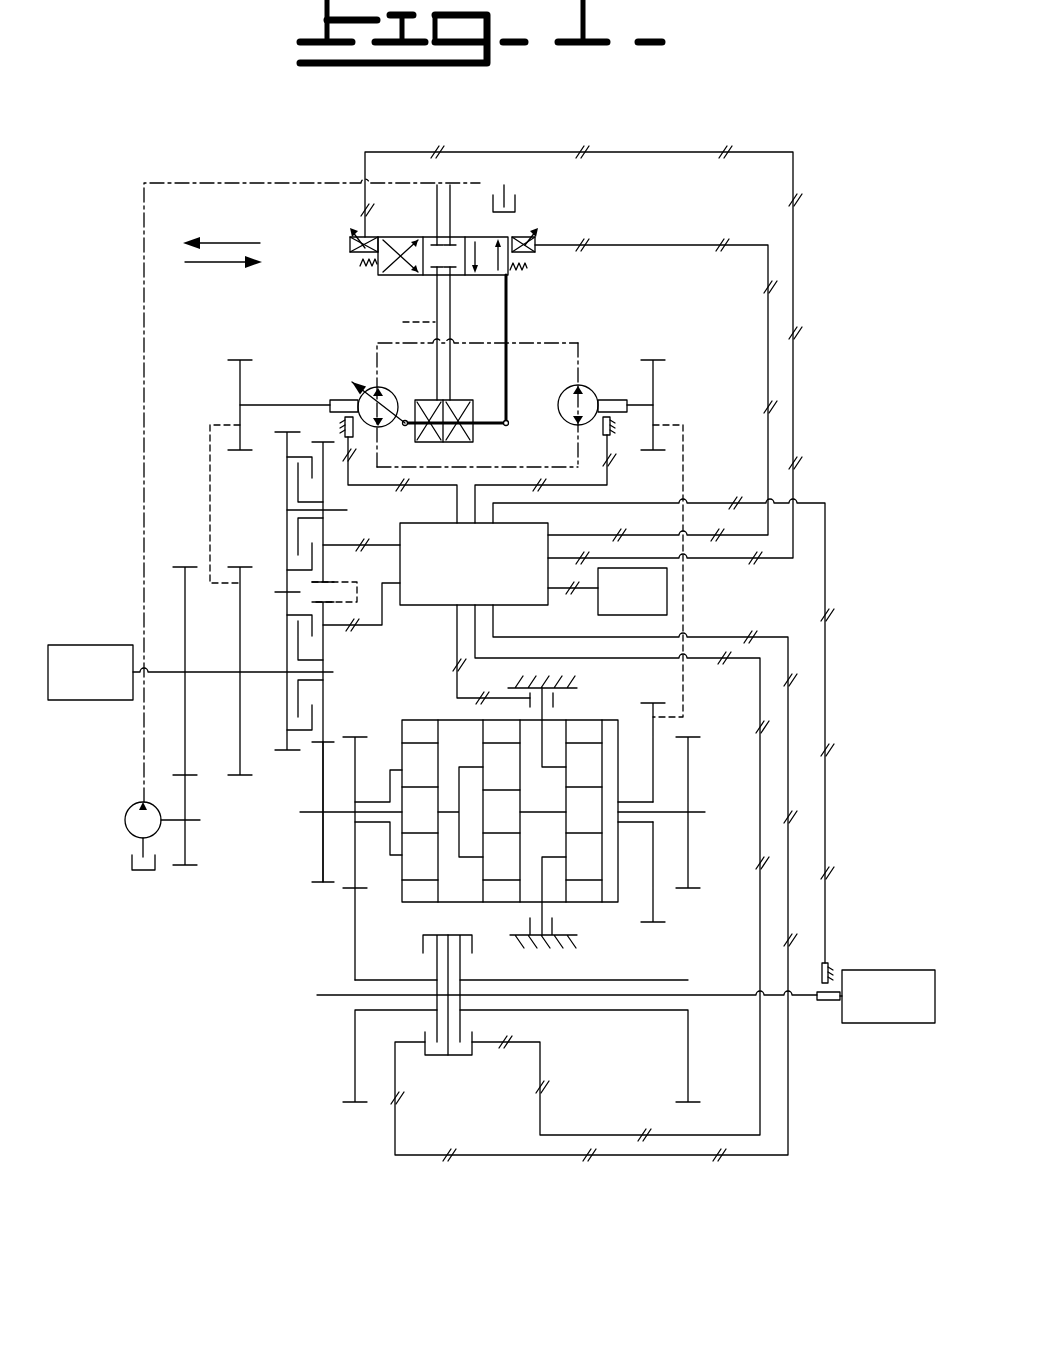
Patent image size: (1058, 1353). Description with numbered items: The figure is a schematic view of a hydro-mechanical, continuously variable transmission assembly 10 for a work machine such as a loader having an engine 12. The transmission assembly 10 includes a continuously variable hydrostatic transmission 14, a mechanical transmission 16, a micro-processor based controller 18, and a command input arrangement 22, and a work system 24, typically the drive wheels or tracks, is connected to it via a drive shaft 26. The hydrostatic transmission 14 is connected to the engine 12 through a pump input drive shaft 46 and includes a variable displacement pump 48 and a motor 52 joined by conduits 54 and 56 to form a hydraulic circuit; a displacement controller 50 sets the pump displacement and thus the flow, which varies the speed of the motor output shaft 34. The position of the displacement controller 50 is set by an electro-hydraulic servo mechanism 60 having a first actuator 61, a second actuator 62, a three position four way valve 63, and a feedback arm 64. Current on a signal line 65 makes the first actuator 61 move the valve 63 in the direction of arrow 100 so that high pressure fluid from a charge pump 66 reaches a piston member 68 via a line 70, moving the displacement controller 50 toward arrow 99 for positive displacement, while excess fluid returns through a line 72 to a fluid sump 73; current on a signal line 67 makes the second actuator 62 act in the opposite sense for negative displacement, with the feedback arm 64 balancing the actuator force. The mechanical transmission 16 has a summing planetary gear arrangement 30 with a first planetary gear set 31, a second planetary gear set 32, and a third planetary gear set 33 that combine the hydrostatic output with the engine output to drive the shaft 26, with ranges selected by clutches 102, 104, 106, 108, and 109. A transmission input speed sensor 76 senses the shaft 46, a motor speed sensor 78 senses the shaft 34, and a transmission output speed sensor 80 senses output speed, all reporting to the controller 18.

The transmission assembly 10 is at (170, 111).
The engine 12 is at (80, 645).
The continuously variable hydrostatic transmission 14 is at (651, 318).
The mechanical transmission 16 is at (222, 954).
The controller 18 is at (430, 605).
The command input arrangement 22 is at (598, 605).
The work system 24 is at (905, 970).
The drive shaft 26 is at (325, 997).
The summing planetary gear arrangement 30 is at (397, 701).
The first planetary gear set 31 is at (417, 904).
The second planetary gear set 32 is at (495, 904).
The third planetary gear set 33 is at (612, 904).
The motor output shaft 34 is at (600, 400).
The pump input drive shaft 46 is at (342, 385).
The variable displacement pump 48 is at (388, 388).
The displacement controller 50 is at (405, 428).
The motor 52 is at (565, 390).
The conduit 54 is at (580, 343).
The conduit 56 is at (525, 462).
The electro-hydraulic servo mechanism 60 is at (319, 324).
The first solenoid or first actuator 61 is at (350, 240).
The second solenoid or second actuator 62 is at (538, 252).
The three position four way valve 63 is at (378, 272).
The feedback arm 64 is at (510, 320).
The signal line 65 is at (630, 155).
The charge pump 66 is at (128, 828).
The signal line 67 is at (660, 245).
The piston member 68 is at (455, 398).
The line 70 is at (450, 328).
The line 72 is at (403, 322).
The fluid sump 73 is at (516, 205).
The transmission input speed sensor 76 is at (345, 425).
The motor speed sensor 78 is at (612, 427).
The transmission output speed sensor 80 is at (828, 963).
The arrow 99 is at (238, 243).
The arrow 100 is at (212, 262).
The clutch 102 is at (553, 700).
The clutch 104 is at (423, 945).
The clutch 106 is at (472, 945).
The clutch 108 is at (287, 467).
The clutch 109 is at (287, 707).